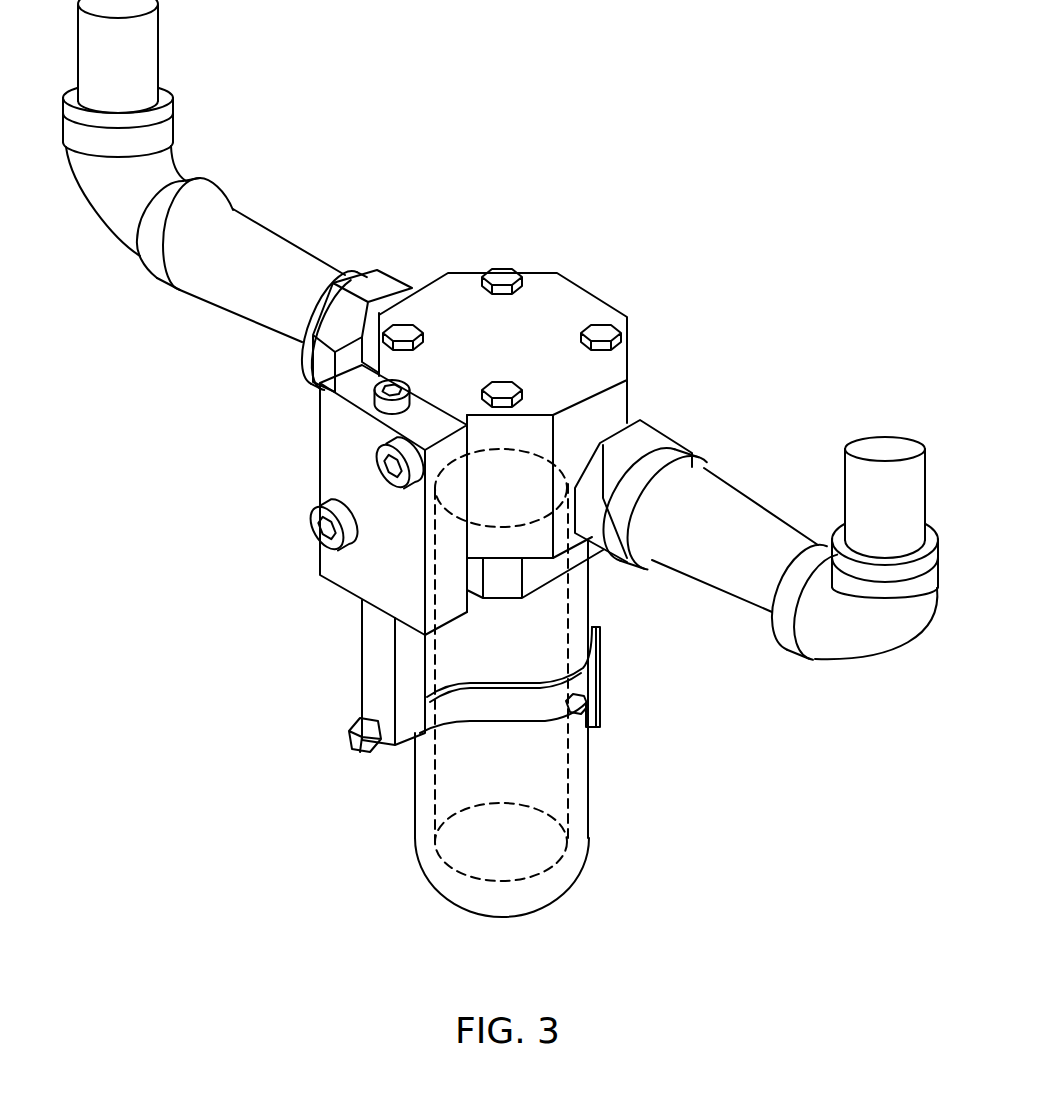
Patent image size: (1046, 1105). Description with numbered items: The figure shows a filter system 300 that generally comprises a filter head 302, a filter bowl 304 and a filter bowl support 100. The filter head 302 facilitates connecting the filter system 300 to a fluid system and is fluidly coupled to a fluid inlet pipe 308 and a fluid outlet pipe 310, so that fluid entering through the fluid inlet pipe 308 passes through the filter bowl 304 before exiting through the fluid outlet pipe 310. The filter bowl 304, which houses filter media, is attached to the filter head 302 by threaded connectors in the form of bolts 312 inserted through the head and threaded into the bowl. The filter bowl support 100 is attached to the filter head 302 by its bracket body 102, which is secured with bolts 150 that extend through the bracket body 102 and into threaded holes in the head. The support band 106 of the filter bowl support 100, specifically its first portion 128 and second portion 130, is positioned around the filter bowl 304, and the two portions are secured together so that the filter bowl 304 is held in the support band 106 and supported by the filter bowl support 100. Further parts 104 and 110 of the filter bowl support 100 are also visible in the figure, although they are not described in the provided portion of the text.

The filter bowl support 100 is at (436, 563).
The bracket body 102 is at (356, 489).
The bracket 104 is at (363, 668).
The support band 106 is at (572, 705).
The set screw 110 is at (408, 389).
The first portion 128 is at (536, 728).
The second portion 130 is at (596, 657).
The bolts 150 is at (403, 486).
The filter system 300 is at (592, 236).
The filter head 302 is at (537, 683).
The filter bowl 304 is at (592, 863).
The fluid inlet pipe 308 is at (272, 242).
The fluid outlet pipe 310 is at (733, 503).
The bolts 312 is at (503, 268).